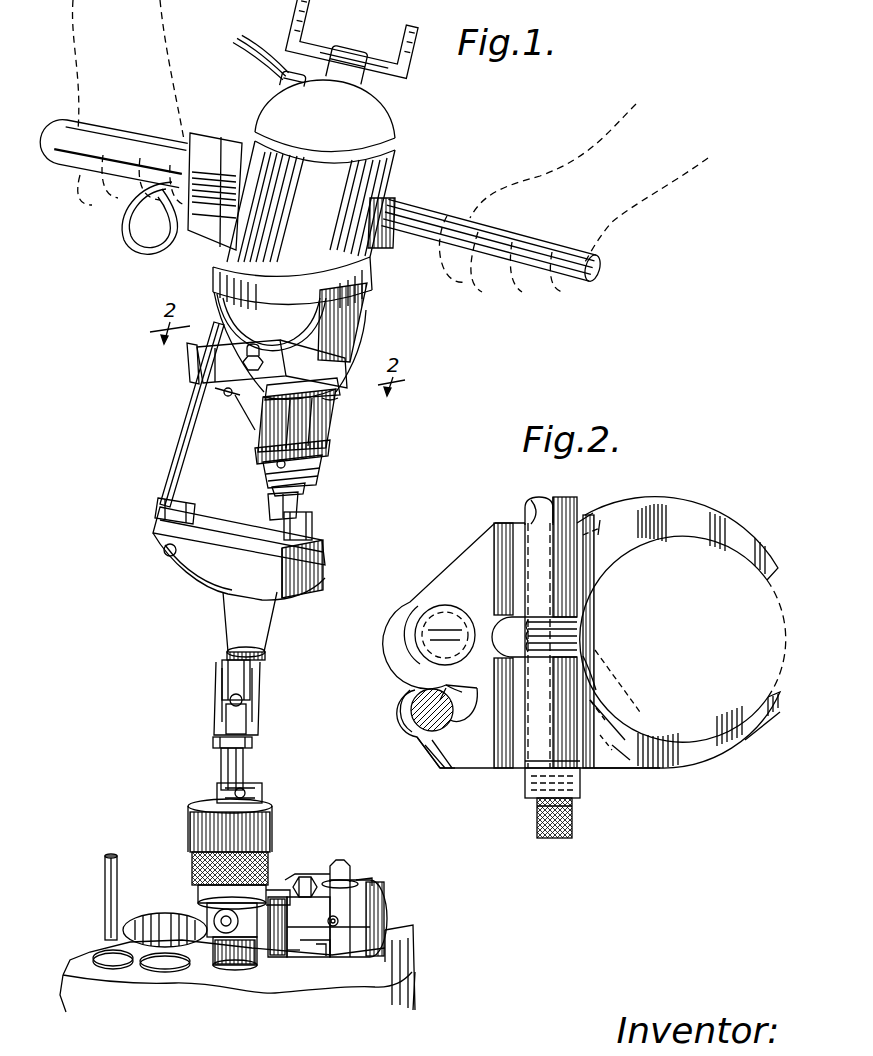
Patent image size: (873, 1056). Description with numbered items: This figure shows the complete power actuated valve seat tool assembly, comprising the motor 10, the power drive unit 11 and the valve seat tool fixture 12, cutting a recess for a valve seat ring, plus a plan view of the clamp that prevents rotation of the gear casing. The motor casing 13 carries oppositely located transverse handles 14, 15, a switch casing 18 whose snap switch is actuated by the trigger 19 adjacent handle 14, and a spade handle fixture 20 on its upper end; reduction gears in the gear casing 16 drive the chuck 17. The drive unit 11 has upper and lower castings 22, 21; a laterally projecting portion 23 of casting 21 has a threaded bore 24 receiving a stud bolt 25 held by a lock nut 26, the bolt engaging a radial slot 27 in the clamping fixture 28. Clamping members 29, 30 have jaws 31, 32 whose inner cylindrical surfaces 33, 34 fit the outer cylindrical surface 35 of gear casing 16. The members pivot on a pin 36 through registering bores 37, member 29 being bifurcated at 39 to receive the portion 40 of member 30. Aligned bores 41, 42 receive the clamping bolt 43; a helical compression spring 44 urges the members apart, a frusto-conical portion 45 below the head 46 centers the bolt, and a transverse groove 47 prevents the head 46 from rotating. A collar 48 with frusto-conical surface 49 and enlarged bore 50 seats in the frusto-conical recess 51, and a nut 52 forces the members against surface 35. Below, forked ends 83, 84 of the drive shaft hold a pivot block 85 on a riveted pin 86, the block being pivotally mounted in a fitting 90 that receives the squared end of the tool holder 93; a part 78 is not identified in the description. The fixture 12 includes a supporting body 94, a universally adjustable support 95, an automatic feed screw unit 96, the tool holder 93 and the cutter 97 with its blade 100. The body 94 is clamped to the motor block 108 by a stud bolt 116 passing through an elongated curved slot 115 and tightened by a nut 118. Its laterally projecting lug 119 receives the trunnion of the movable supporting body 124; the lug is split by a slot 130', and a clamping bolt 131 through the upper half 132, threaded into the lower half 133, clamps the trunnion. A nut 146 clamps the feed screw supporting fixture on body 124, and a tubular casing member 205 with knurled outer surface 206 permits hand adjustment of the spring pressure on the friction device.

In FIG. 1, the motor 10 is at (365, 195).
In FIG. 1, the power drive unit 11 is at (300, 570).
In FIG. 1, the valve seat tool fixture 12 is at (298, 870).
In FIG. 1, the motor casing 13 is at (355, 165).
In FIG. 1, the transverse handle 14 is at (130, 145).
In FIG. 1, the transverse handle 15 is at (438, 224).
In FIG. 1, the gear casing 16 is at (352, 340).
In FIG. 1, the chuck 17 is at (330, 432).
In FIG. 1, the switch casing 18 is at (214, 152).
In FIG. 1, the trigger 19 is at (160, 192).
In FIG. 1, the spade handle fixture 20 is at (370, 62).
In FIG. 1, the lower power drive casting 21 is at (188, 573).
In FIG. 1, the upper casting 22 is at (300, 527).
In FIG. 1, the laterally projecting portion 23 is at (157, 530).
In FIG. 1, the threaded bore 24 is at (164, 552).
In FIG. 1, the stud bolt 25 is at (190, 441).
In FIG. 2, the stud bolt 25 is at (446, 712).
In FIG. 1, the lock nut 26 is at (158, 510).
In FIG. 1, the slot 27 is at (198, 378).
In FIG. 2, the slot 27 is at (440, 752).
In FIG. 1, the clamping fixture 28 is at (237, 413).
In FIG. 2, the clamping fixture 28 is at (641, 770).
In FIG. 2, the clamping member 29 is at (496, 548).
In FIG. 2, the clamping member 30 is at (452, 768).
In FIG. 2, the jaw 31 is at (700, 520).
In FIG. 1, the jaw 32 is at (337, 402).
In FIG. 2, the jaw 32 is at (700, 758).
In FIG. 2, the inner cylindrical surface 33 is at (660, 515).
In FIG. 2, the inner cylindrical surface 34 is at (680, 742).
In FIG. 1, the outer cylindrical surface 35 is at (348, 375).
In FIG. 2, the pivot bolt 36 is at (443, 620).
In FIG. 2, the registering bores 37 is at (426, 614).
In FIG. 2, the bifurcated portion 39 is at (410, 670).
In FIG. 1, the portion of clamping member 40 is at (197, 360).
In FIG. 2, the portion of clamping member 40 is at (406, 657).
In FIG. 2, the aligned bore 41 is at (600, 520).
In FIG. 2, the aligned bore 42 is at (590, 690).
In FIG. 1, the clamping bolt 43 is at (255, 344).
In FIG. 2, the clamping bolt 43 is at (592, 605).
In FIG. 2, the helical compression spring 44 is at (578, 636).
In FIG. 2, the frusto-conical portion 45 is at (541, 504).
In FIG. 2, the bolt head 46 is at (568, 500).
In FIG. 2, the transverse groove 47 is at (530, 515).
In FIG. 2, the collar 48 is at (602, 790).
In FIG. 2, the frusto-conical surface 49 is at (626, 732).
In FIG. 2, the enlarged bore 50 is at (606, 722).
In FIG. 2, the frusto-conical recess 51 is at (506, 778).
In FIG. 1, the nut 52 is at (223, 392).
In FIG. 2, the nut 52 is at (540, 808).
In FIG. 1, the adapter 78 is at (262, 514).
In FIG. 1, the forked end 83 is at (224, 696).
In FIG. 1, the forked end 84 is at (244, 698).
In FIG. 1, the pivot block 85 is at (220, 714).
In FIG. 1, the riveted pin 86 is at (242, 710).
In FIG. 1, the fitting 90 is at (223, 743).
In FIG. 1, the tool holder 93 is at (238, 772).
In FIG. 1, the supporting body 94 is at (285, 955).
In FIG. 1, the universally adjustable support 95 is at (205, 896).
In FIG. 1, the automatic feed screw unit 96 is at (275, 828).
In FIG. 1, the cutter 97 is at (105, 935).
In FIG. 1, the blade 100 is at (226, 945).
In FIG. 1, the motor block 108 is at (100, 998).
In FIG. 1, the elongated curved slot 115 is at (386, 882).
In FIG. 1, the stud bolt 116 is at (352, 880).
In FIG. 1, the nut 118 is at (308, 877).
In FIG. 1, the laterally projecting lug 119 is at (372, 880).
In FIG. 1, the movable supporting body 124 is at (234, 933).
In FIG. 1, the slot 130' is at (427, 963).
In FIG. 1, the clamping bolt 131 is at (338, 858).
In FIG. 1, the upper half of lug 132 is at (340, 920).
In FIG. 1, the lower half of lug 133 is at (318, 957).
In FIG. 1, the nut 146 is at (228, 930).
In FIG. 1, the tubular skirt 205 is at (190, 846).
In FIG. 1, the knurled outer surface 206 is at (322, 449).